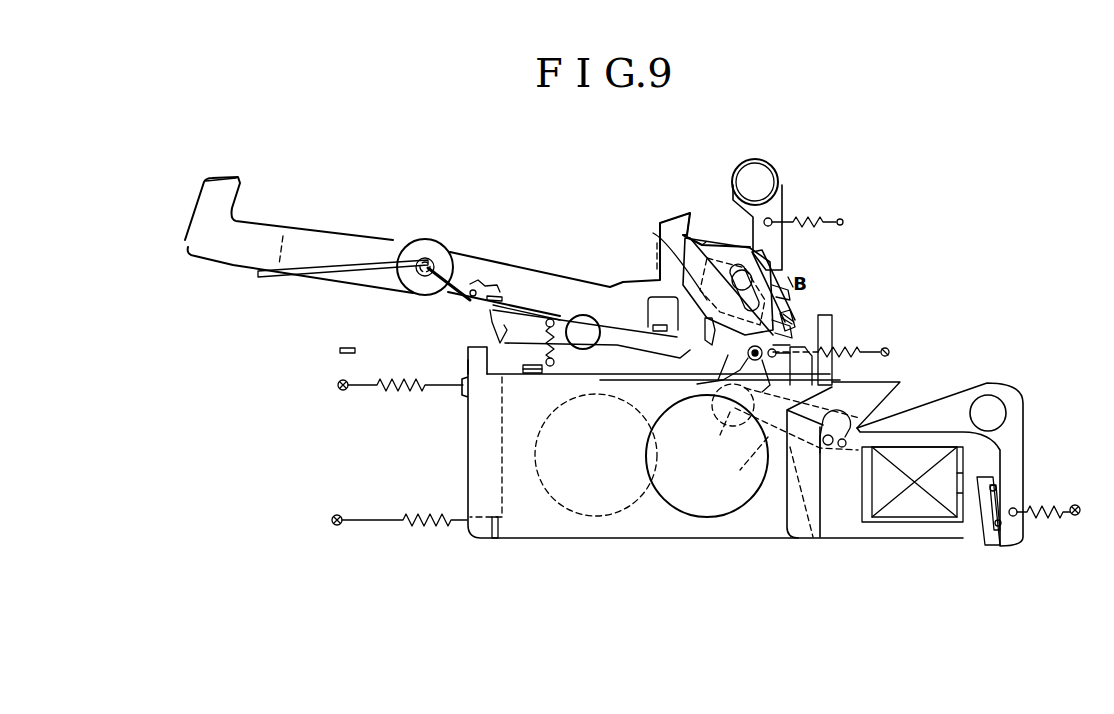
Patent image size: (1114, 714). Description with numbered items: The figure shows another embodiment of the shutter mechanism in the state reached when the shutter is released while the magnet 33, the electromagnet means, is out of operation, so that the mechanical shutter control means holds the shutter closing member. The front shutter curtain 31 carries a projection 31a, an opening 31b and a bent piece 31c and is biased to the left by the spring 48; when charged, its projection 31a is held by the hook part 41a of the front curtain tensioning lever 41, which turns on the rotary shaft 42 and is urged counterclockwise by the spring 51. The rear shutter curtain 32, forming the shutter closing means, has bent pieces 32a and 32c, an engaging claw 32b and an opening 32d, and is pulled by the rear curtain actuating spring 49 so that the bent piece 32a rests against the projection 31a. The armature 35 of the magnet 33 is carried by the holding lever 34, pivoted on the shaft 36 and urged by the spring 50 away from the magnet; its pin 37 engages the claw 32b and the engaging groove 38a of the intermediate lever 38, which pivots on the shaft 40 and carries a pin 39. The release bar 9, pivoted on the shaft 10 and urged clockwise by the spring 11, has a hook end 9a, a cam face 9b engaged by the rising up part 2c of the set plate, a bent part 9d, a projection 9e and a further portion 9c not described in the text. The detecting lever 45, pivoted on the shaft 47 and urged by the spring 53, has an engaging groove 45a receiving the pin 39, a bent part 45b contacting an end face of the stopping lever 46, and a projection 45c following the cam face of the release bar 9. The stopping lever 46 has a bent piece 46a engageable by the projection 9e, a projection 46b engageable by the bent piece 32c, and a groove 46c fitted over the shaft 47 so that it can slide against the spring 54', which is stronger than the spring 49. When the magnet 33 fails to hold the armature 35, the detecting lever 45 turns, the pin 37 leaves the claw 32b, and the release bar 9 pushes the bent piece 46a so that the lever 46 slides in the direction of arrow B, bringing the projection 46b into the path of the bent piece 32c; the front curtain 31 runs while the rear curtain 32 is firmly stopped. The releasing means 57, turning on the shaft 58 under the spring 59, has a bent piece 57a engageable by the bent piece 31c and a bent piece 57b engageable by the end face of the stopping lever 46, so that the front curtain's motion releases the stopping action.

The release bar 9 is at (338, 243).
The end of release bar 9a is at (209, 178).
The cam face of release bar 9b is at (522, 303).
The arm block 9c is at (652, 313).
The bent part of release bar 9d is at (657, 260).
The projection of release bar 9e is at (667, 220).
The shaft 10 is at (425, 257).
The spring 11 is at (271, 281).
The rising up part of set plate 2c is at (492, 292).
The rotary shaft 42 is at (583, 322).
The detecting lever 45 is at (720, 380).
The engaging groove 45a is at (760, 385).
The bent part of detecting lever 45b is at (790, 290).
The projection of detecting lever 45c is at (654, 234).
The stopping lever 46 is at (713, 240).
The bent piece of stopping lever 46a is at (695, 237).
The projection of stopping lever 46b is at (825, 348).
The groove of stopping lever 46c is at (815, 297).
The shaft 47 is at (735, 262).
The shaft 58 is at (752, 161).
The releasing means 57 is at (783, 195).
The bent piece of releasing means 57a is at (712, 325).
The bent piece of releasing means 57b is at (800, 318).
The spring 59 is at (815, 220).
The spring 54' is at (783, 276).
The spring 53 is at (885, 350).
The front shutter curtain 31 is at (470, 463).
The projection of front shutter curtain 31a is at (469, 356).
The opening of front shutter curtain 31b is at (685, 514).
The bent piece of front shutter curtain 31c is at (832, 320).
The rear shutter curtain 32 is at (790, 530).
The bent piece of rear curtain 32a is at (530, 373).
The engaging claw of rear curtain 32b is at (840, 415).
The bent piece of rear curtain 32c is at (815, 372).
The opening of rear curtain 32d is at (600, 515).
The magnet 33 is at (917, 510).
The armature holding lever 34 is at (978, 385).
The armature 35 is at (990, 545).
The shaft 36 is at (1007, 413).
The pin 37 is at (838, 448).
The intermediate lever 38 is at (745, 440).
The engaging groove of intermediate lever 38a is at (825, 480).
The pin 39 is at (748, 353).
The shaft 40 is at (722, 415).
The front curtain tensioning lever 41 is at (625, 338).
The hook part 41a is at (493, 325).
The spring 48 is at (400, 388).
The rear curtain actuating spring 49 is at (430, 523).
The spring 50 is at (1050, 516).
The spring 51 is at (553, 362).